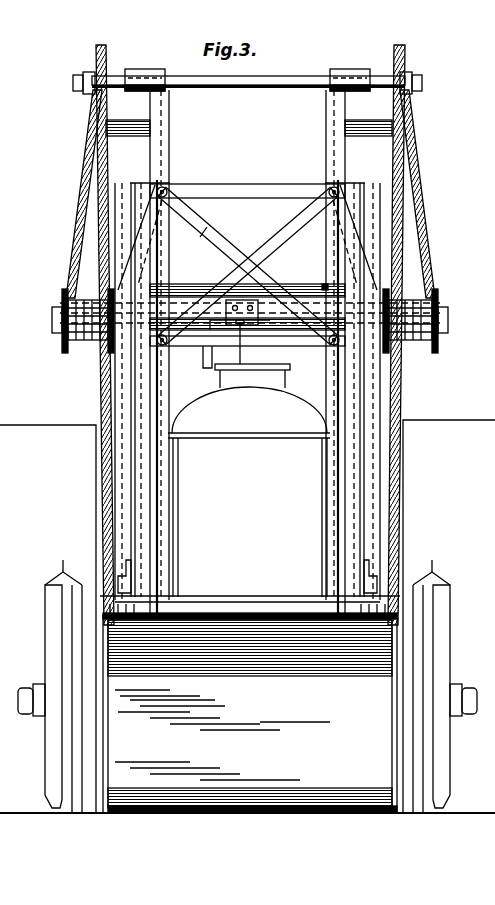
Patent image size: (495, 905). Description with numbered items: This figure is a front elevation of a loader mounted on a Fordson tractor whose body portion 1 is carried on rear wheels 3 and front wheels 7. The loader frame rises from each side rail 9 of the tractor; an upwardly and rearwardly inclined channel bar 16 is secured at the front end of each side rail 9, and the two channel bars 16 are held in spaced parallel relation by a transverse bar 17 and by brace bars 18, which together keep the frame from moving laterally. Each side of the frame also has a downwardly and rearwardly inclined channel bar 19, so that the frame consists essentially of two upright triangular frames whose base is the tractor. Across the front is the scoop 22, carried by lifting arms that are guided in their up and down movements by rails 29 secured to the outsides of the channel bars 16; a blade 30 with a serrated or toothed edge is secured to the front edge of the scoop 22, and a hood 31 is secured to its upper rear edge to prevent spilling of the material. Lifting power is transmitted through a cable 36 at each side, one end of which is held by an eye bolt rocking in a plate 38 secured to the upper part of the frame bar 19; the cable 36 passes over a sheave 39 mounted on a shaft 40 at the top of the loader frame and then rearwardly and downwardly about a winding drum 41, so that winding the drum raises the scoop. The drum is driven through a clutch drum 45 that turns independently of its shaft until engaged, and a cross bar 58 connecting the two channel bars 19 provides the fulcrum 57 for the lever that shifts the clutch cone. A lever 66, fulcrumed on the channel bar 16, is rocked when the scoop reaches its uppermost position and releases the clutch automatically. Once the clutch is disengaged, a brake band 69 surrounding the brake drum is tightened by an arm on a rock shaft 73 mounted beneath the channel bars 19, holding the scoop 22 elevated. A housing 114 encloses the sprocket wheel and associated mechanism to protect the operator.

The body portion 1 is at (250, 494).
The rear wheels 3 is at (466, 426).
The front wheels 7 is at (50, 755).
The side rail 9 is at (136, 565).
The channel bar 16 is at (170, 158).
The transverse bar 17 is at (286, 172).
The brace bars 18 is at (212, 234).
The channel bar 19 is at (118, 392).
The scoop 22 is at (250, 714).
The rails 29 is at (145, 503).
The blade 30 is at (338, 806).
The hood 31 is at (255, 614).
The cable 36 is at (418, 217).
The plate 38 is at (134, 136).
The sheave 39 is at (108, 62).
The shaft 40 is at (249, 87).
The winding drum 41 is at (414, 332).
The clutch drum 45 is at (191, 360).
The fulcrum 57 is at (241, 330).
The cross bar 58 is at (310, 290).
The lever 66 is at (347, 178).
The brake band 69 is at (216, 372).
The rock shaft 73 is at (277, 328).
The housing 114 is at (207, 227).